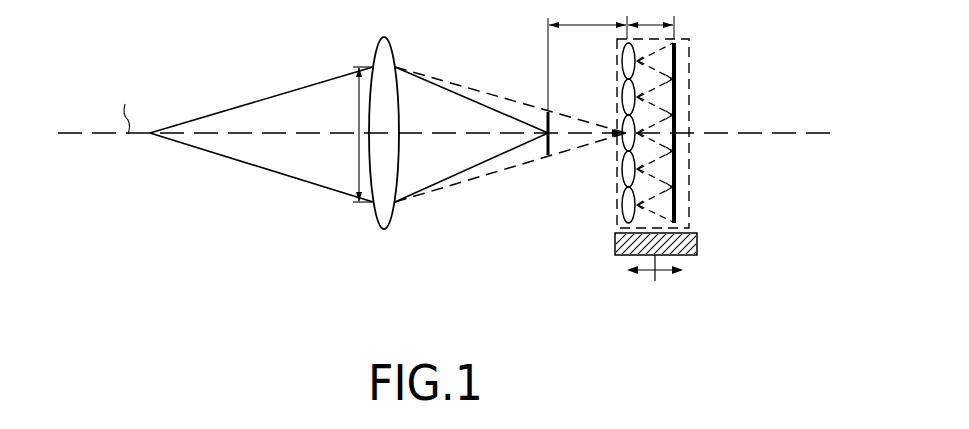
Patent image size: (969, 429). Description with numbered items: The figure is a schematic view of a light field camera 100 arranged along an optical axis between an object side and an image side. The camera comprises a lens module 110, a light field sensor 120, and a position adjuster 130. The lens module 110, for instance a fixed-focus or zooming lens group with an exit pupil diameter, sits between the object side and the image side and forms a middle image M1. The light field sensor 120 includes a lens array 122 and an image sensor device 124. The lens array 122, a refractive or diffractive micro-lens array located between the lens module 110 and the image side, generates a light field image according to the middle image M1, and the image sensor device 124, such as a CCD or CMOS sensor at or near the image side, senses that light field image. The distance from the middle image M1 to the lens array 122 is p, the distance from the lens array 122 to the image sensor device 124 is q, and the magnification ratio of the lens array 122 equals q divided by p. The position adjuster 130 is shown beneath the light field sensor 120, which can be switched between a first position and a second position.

The light field camera 100 is at (450, 152).
The lens module 110 is at (374, 45).
The light field sensor 120 is at (690, 57).
The lens array 122 is at (621, 61).
The image sensor device 124 is at (677, 100).
The position adjuster 130 is at (699, 245).
The middle image M1 is at (553, 148).